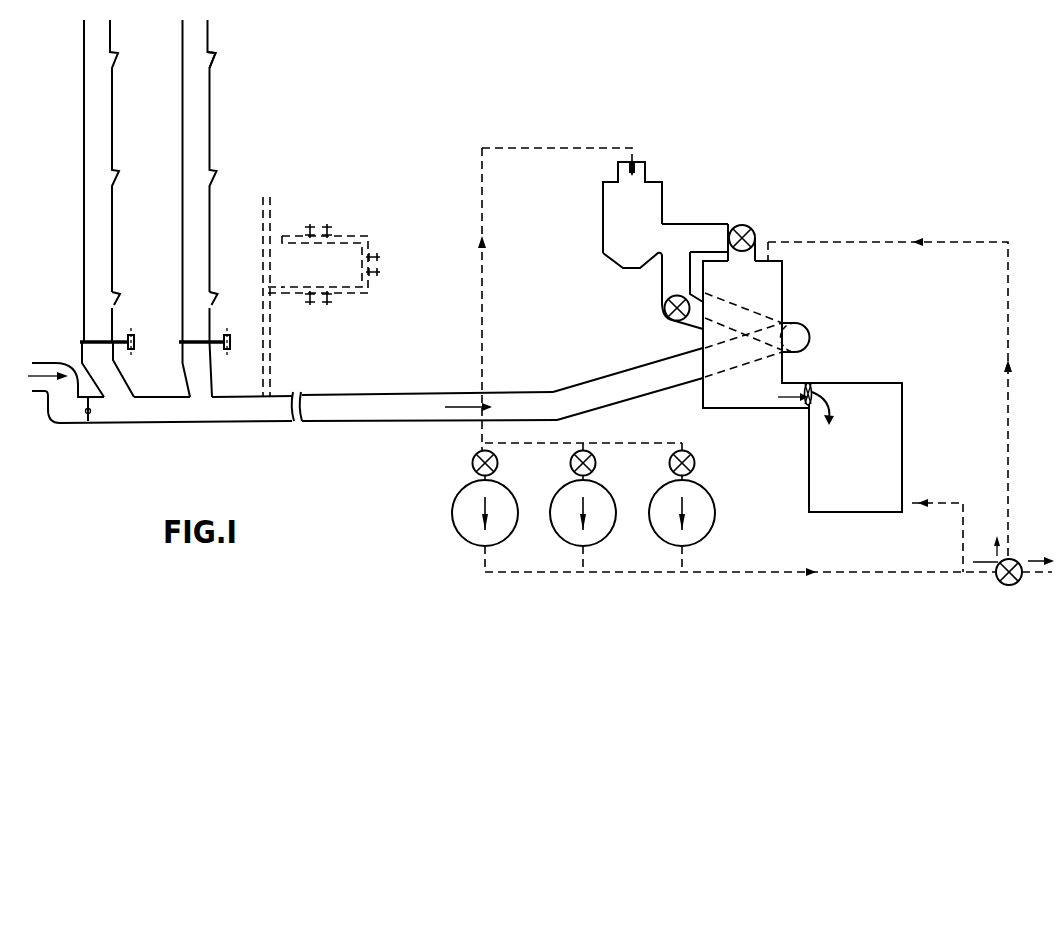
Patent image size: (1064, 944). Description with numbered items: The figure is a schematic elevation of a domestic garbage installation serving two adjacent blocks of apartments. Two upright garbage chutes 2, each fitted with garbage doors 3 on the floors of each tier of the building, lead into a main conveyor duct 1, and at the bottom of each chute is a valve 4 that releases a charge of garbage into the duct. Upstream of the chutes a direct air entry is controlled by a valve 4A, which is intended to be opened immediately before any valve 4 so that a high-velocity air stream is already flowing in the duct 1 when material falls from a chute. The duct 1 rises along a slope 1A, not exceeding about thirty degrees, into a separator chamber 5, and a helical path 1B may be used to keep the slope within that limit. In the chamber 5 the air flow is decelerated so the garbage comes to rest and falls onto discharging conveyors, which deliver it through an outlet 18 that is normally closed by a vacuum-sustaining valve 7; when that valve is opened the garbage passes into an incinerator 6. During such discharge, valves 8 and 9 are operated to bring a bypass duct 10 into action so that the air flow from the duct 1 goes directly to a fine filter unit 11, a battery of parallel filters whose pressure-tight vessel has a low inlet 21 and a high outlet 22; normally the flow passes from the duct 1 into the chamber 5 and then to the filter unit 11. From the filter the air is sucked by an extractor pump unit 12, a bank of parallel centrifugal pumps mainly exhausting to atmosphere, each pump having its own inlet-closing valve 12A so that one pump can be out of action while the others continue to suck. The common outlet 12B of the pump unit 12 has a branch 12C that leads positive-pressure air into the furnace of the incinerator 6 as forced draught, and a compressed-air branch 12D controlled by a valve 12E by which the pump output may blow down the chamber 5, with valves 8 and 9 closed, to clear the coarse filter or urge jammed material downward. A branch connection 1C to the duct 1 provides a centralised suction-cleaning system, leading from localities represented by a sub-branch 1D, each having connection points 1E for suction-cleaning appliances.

The main conveyor duct 1 is at (148, 410).
The slope 1A is at (581, 383).
The helical path 1B is at (808, 332).
The branch connection 1C is at (274, 357).
The sub-branch 1D is at (353, 295).
The connection points 1E is at (325, 223).
The upright garbage chutes 2 is at (103, 127).
The garbage doors 3 is at (222, 62).
The valve 4 is at (110, 347).
The valve 4A is at (92, 420).
The separator chamber 5 is at (784, 283).
The incinerator 6 is at (903, 432).
The vacuum-sustaining valve 7 is at (813, 387).
The valve 8 is at (670, 318).
The valve 9 is at (753, 230).
The bypass duct 10 is at (673, 275).
The fine filter unit 11 is at (647, 203).
The extractor pump unit 12 is at (715, 508).
The inlet-closing valve 12A is at (473, 466).
The common outlet 12B is at (788, 576).
The branch 12C is at (961, 541).
The compressed-air branch 12D is at (1011, 470).
The valve 12E is at (1006, 584).
The outlet 18 is at (809, 404).
The low inlet 21 is at (662, 240).
The high outlet 22 is at (645, 167).